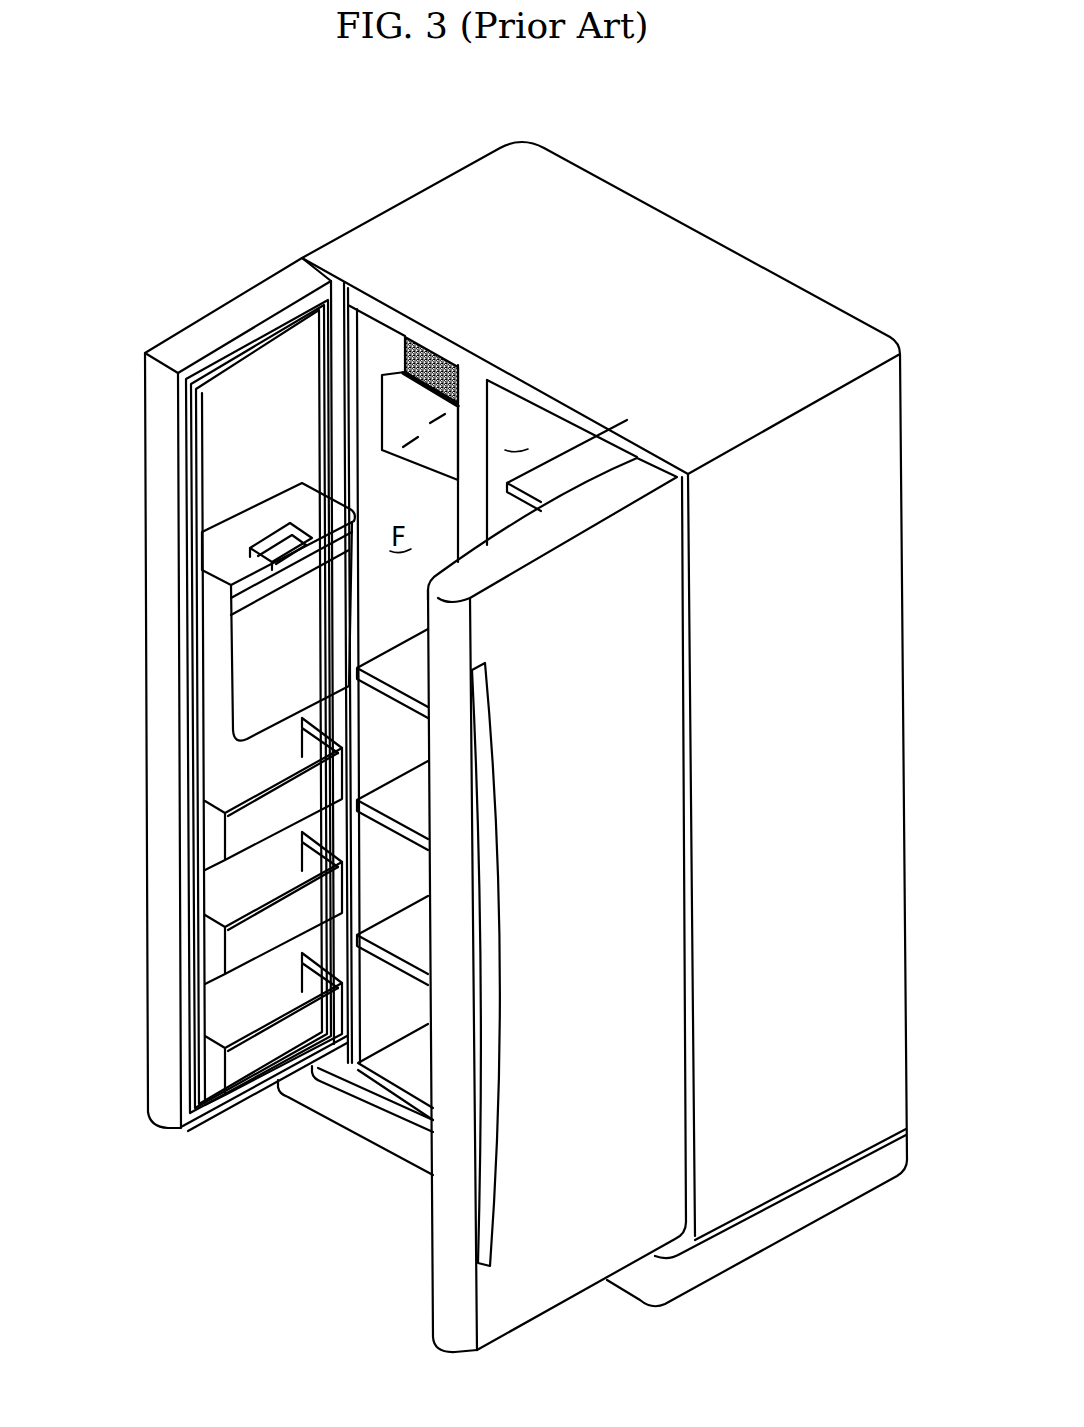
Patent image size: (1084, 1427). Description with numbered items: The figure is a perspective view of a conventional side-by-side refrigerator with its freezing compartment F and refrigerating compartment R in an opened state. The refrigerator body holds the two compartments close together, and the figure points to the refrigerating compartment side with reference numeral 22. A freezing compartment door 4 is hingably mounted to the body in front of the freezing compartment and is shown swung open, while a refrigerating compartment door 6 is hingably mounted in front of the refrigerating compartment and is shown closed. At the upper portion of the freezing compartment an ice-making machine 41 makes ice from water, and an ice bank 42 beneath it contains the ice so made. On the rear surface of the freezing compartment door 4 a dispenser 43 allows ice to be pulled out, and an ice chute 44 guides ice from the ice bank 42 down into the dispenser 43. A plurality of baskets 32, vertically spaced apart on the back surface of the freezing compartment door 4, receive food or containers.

The freezing compartment door 4 is at (168, 852).
The refrigerating compartment door 6 is at (452, 1276).
The refrigerating compartment 22 is at (503, 405).
The baskets 32 is at (213, 957).
The ice-making machine 41 is at (405, 360).
The ice bank 42 is at (403, 420).
The dispenser 43 is at (213, 588).
The ice chute 44 is at (213, 707).